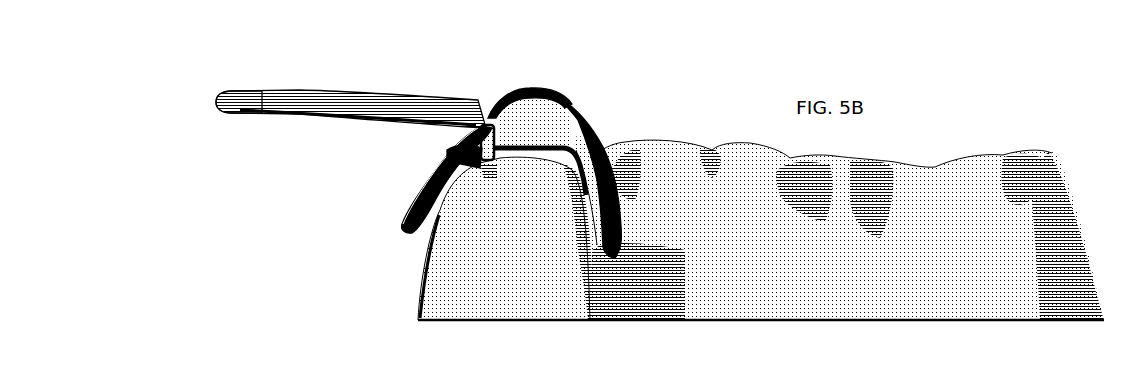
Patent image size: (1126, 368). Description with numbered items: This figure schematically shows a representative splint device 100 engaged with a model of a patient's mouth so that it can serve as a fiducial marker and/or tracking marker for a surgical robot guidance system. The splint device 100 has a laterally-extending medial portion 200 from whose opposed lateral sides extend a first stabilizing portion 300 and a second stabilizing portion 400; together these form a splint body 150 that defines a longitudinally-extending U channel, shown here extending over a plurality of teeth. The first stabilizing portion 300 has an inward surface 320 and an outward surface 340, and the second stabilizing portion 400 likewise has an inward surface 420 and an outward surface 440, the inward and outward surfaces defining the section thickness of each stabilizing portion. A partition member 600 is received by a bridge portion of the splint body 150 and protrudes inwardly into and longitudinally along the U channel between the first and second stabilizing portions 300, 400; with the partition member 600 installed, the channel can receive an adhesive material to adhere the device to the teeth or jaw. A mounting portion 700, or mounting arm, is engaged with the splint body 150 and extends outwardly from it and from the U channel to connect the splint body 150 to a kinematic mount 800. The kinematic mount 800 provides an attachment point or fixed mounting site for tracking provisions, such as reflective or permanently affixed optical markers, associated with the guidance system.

The splint device 100 is at (491, 75).
The splint body 150 is at (332, 95).
The medial portion 200 is at (505, 157).
The first stabilizing portion 300 is at (410, 217).
The inward surface 320 is at (465, 183).
The outward surface 340 is at (408, 185).
The second stabilizing portion 400 is at (621, 228).
The inward surface 420 is at (580, 190).
The outward surface 440 is at (623, 181).
The partition member 600 is at (487, 166).
The mounting portion 700 is at (332, 118).
The kinematic mount 800 is at (220, 119).